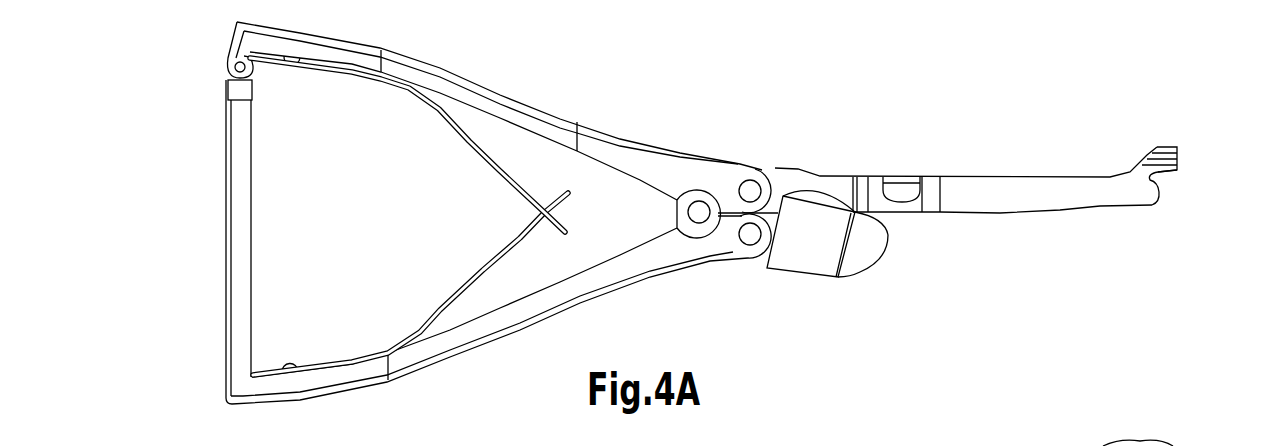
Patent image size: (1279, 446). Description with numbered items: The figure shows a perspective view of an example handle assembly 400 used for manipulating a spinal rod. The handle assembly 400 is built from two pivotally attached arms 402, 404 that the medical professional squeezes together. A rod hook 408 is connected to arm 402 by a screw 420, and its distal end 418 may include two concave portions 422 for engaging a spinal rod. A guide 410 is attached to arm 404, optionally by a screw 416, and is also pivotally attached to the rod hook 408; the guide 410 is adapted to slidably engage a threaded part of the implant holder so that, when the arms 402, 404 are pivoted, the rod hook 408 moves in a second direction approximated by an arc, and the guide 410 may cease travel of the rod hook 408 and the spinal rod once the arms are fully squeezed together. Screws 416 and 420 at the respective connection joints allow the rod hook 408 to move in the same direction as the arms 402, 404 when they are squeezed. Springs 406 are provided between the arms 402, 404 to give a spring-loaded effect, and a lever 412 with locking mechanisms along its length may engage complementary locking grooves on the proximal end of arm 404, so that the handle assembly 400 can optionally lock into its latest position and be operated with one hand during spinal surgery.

The handle assembly 400 is at (178, 152).
The arm 402 is at (503, 73).
The arm 404 is at (378, 383).
The springs 406 is at (513, 240).
The rod hook 408 is at (1007, 177).
The guide 410 is at (790, 263).
The lever 412 is at (225, 224).
The screw 416 is at (748, 237).
The distal end 418 is at (1180, 146).
The screw 420 is at (775, 167).
The concave portions 422 is at (1157, 178).